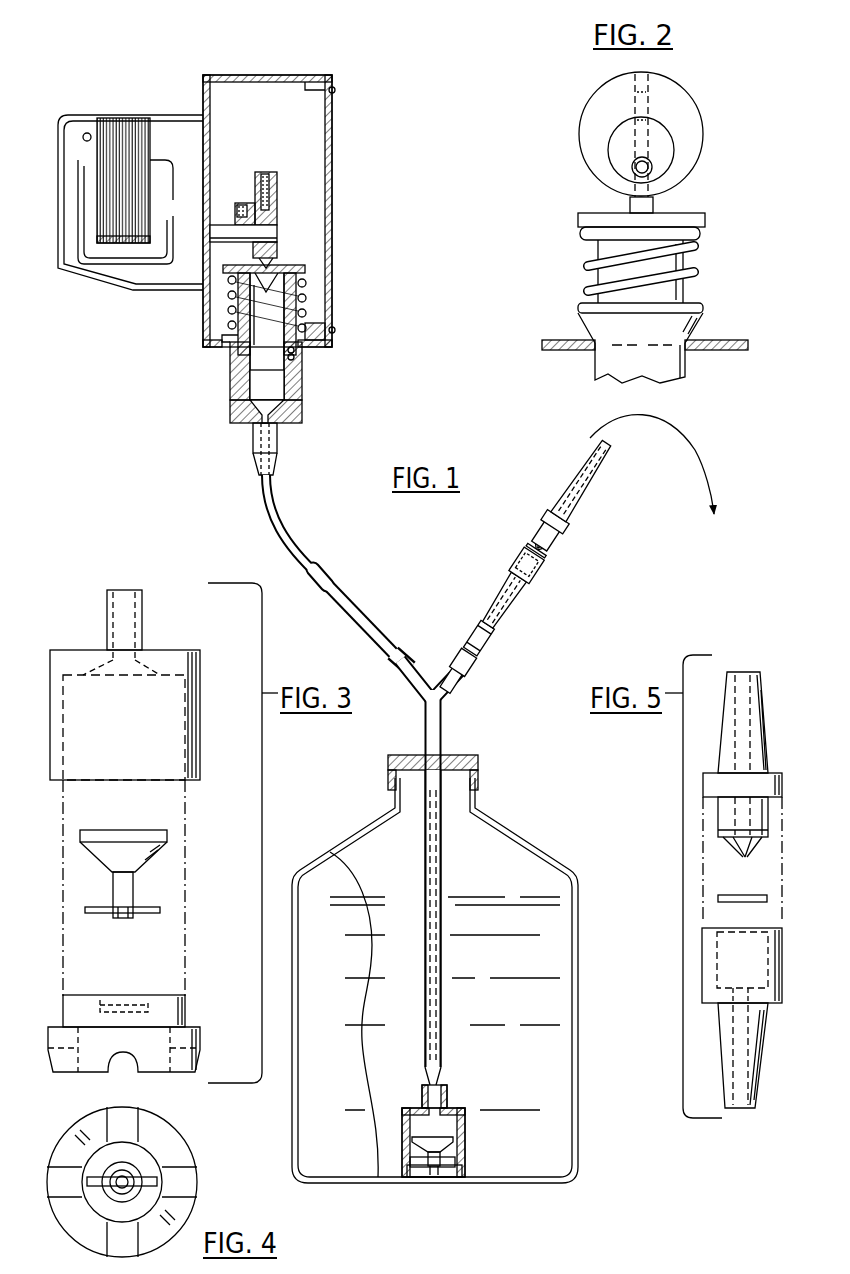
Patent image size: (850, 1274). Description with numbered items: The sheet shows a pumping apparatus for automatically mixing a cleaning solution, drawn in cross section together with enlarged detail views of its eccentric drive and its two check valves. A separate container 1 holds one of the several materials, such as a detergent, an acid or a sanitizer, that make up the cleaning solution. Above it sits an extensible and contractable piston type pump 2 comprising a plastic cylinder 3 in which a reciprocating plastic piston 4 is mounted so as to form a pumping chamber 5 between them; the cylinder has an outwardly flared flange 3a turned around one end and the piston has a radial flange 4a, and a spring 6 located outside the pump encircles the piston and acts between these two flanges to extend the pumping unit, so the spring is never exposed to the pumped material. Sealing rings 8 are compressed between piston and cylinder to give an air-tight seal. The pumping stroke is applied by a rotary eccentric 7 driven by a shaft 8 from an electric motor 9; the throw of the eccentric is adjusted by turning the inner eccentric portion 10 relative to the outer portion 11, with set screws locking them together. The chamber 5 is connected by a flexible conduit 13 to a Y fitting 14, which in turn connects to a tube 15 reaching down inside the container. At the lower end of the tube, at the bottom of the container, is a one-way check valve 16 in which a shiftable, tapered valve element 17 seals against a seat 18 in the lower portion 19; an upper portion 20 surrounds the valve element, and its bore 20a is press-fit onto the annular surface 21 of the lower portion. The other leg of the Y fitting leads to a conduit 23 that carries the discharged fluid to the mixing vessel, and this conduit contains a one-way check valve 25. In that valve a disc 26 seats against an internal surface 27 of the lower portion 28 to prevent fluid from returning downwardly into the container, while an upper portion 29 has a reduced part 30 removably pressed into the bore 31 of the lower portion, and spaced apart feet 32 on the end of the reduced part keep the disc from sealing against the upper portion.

In FIG. 1, the container 1 is at (528, 836).
In FIG. 1, the piston type pump 2 is at (311, 172).
In FIG. 1, the cylinder 3 is at (300, 412).
In FIG. 1, the outwardly flared flange 3a is at (232, 337).
In FIG. 2, the outwardly flared flange 3a is at (702, 322).
In FIG. 1, the piston 4 is at (297, 291).
In FIG. 2, the piston 4 is at (668, 267).
In FIG. 3, the piston 4 is at (40, 1073).
In FIG. 1, the radial flange 4a is at (308, 270).
In FIG. 2, the radial flange 4a is at (707, 220).
In FIG. 1, the pumping chamber 5 is at (262, 376).
In FIG. 1, the spring 6 is at (307, 313).
In FIG. 2, the spring 6 is at (698, 275).
In FIG. 1, the eccentric 7 is at (283, 209).
In FIG. 2, the eccentric 7 is at (708, 160).
In FIG. 1, the shaft 8 is at (236, 226).
In FIG. 2, the shaft 8 is at (634, 168).
In FIG. 1, the electric motor 9 is at (123, 247).
In FIG. 2, the inner eccentric portion 10 is at (664, 143).
In FIG. 2, the outer portion 11 is at (686, 103).
In FIG. 1, the flexible conduit 13 is at (303, 535).
In FIG. 1, the Y fitting 14 is at (444, 733).
In FIG. 1, the tube 15 is at (440, 884).
In FIG. 1, the one-way check valve 16 is at (451, 1129).
In FIG. 3, the one-way check valve 16 is at (129, 831).
In FIG. 4, the one-way check valve 16 is at (131, 1181).
In FIG. 1, the valve element 17 is at (423, 1137).
In FIG. 3, the valve element 17 is at (156, 857).
In FIG. 4, the valve element 17 is at (116, 1192).
In FIG. 1, the seat 18 is at (454, 1154).
In FIG. 3, the seat 18 is at (107, 998).
In FIG. 1, the lower portion 19 is at (462, 1170).
In FIG. 3, the lower portion 19 is at (188, 1010).
In FIG. 4, the lower portion 19 is at (182, 1153).
In FIG. 1, the upper portion 20 is at (451, 1108).
In FIG. 3, the upper portion 20 is at (198, 678).
In FIG. 3, the bore 20a is at (66, 749).
In FIG. 1, the annular surface 21 is at (412, 1156).
In FIG. 3, the annular surface 21 is at (63, 1004).
In FIG. 1, the conduit 23 is at (492, 637).
In FIG. 1, the one-way check valve 25 is at (562, 551).
In FIG. 5, the one-way check valve 25 is at (791, 732).
In FIG. 1, the disc 26 is at (509, 563).
In FIG. 5, the disc 26 is at (766, 898).
In FIG. 5, the internal surface 27 is at (765, 985).
In FIG. 1, the lower portion 28 is at (521, 591).
In FIG. 5, the lower portion 28 is at (763, 1041).
In FIG. 1, the upper portion 29 is at (556, 528).
In FIG. 5, the upper portion 29 is at (766, 756).
In FIG. 1, the reduced part 30 is at (519, 553).
In FIG. 5, the reduced part 30 is at (769, 810).
In FIG. 5, the bore 31 is at (765, 952).
In FIG. 1, the feet 32 is at (548, 568).
In FIG. 5, the feet 32 is at (742, 859).